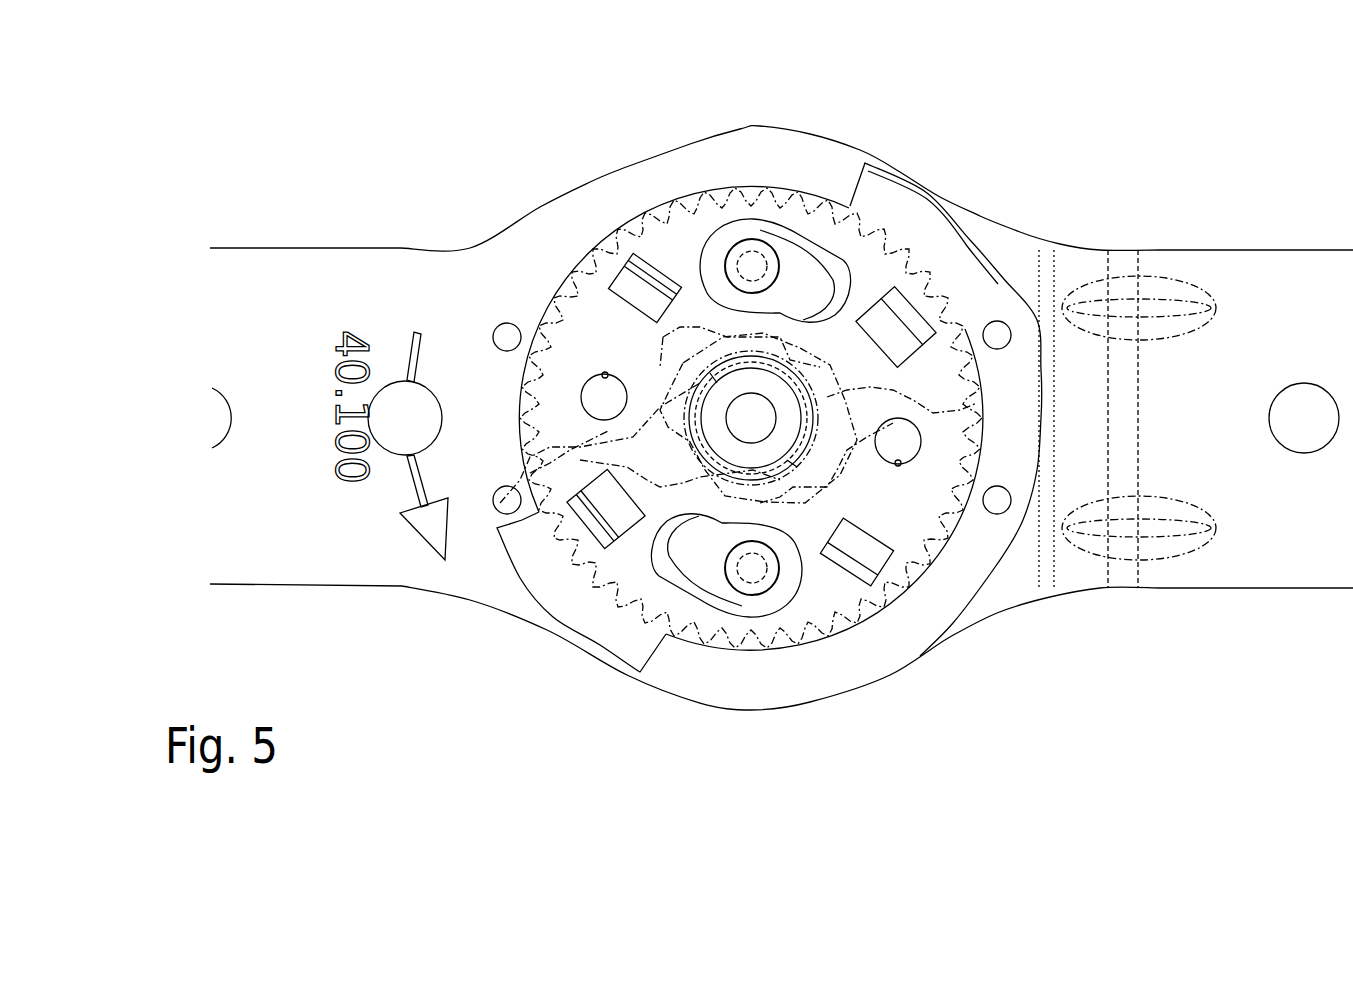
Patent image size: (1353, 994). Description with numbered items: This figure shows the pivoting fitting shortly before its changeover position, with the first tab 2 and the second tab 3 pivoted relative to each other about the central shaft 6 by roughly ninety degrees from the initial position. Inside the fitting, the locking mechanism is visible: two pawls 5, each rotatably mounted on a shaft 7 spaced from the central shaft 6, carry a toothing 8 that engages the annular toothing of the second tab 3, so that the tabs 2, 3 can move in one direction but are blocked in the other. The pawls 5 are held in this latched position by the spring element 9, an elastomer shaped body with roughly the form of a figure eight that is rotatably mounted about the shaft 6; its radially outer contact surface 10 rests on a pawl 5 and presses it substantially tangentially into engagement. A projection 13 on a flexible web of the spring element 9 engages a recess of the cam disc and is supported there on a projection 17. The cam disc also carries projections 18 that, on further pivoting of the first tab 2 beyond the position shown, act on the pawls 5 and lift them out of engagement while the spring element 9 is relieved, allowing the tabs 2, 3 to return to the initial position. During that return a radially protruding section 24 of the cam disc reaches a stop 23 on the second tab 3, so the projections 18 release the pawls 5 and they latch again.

The first tab 2 is at (1262, 282).
The second tab 3 is at (295, 300).
The pawl 5 is at (598, 330).
The shaft 6 is at (753, 437).
The shaft 7 is at (750, 262).
The toothing 8 is at (535, 345).
The spring element 9 is at (680, 482).
The contact surface 10 is at (557, 460).
The projection 13 is at (573, 450).
The projection 17 is at (617, 537).
The projection 18 is at (852, 560).
The stop 23 is at (999, 500).
The radially protruding section 24 is at (940, 233).